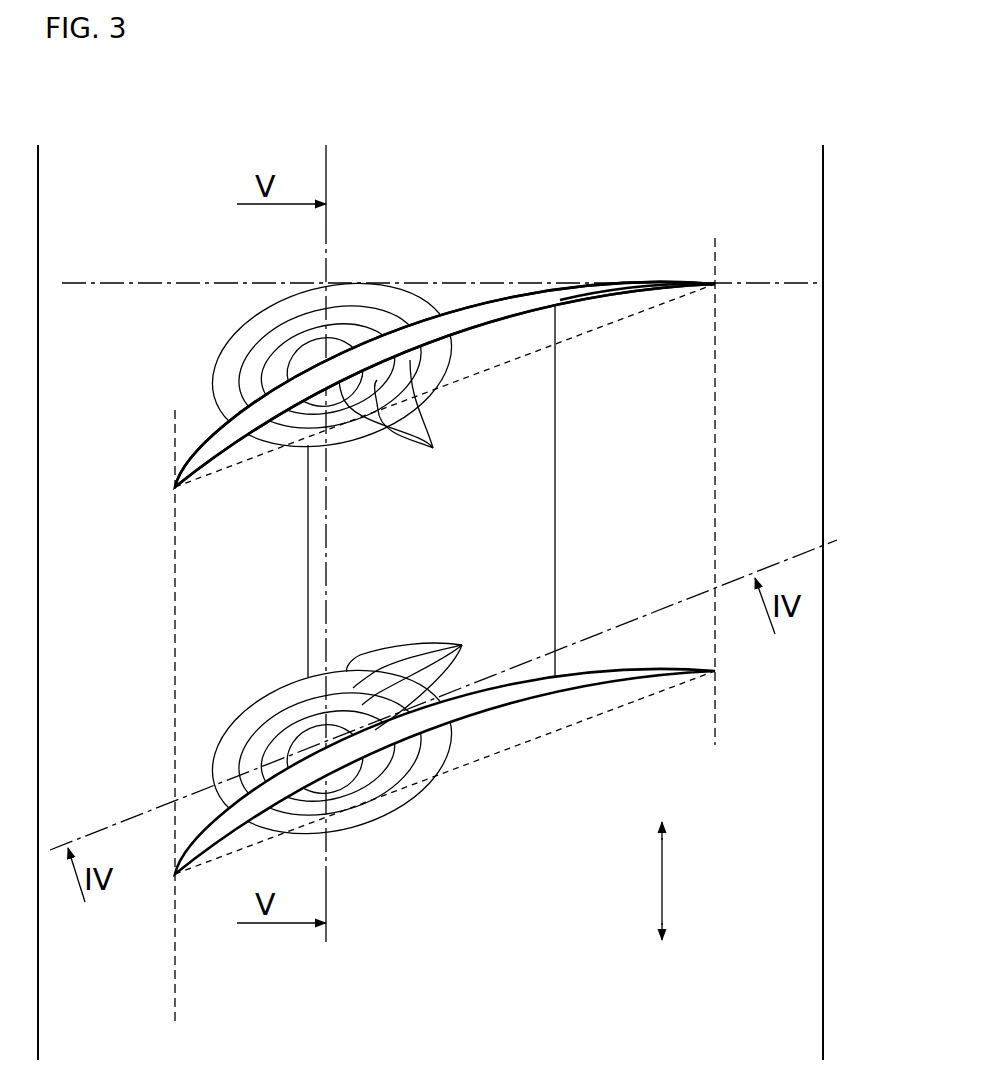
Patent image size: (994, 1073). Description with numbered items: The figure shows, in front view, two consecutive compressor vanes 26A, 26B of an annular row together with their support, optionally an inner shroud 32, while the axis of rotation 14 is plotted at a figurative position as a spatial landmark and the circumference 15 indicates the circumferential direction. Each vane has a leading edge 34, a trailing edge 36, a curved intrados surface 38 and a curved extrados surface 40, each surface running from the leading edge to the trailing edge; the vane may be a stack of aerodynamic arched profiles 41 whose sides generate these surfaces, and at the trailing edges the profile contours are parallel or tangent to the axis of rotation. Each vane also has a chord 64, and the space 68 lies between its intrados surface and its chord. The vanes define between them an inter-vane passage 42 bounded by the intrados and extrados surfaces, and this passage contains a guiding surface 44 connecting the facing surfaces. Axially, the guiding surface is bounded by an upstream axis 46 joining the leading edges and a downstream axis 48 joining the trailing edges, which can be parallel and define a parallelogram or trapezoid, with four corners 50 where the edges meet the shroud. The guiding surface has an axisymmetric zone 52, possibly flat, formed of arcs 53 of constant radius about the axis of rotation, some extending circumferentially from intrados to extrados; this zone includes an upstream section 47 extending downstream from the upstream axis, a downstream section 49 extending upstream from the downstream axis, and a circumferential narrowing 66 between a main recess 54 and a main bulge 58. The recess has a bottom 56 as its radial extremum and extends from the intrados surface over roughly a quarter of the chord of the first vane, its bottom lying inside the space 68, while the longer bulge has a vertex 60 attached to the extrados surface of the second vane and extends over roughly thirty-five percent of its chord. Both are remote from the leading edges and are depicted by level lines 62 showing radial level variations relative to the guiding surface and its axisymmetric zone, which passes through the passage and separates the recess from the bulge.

The axis of rotation 14 is at (131, 282).
The circumference 15 is at (663, 878).
The first vane 26A is at (424, 212).
The second vane 26B is at (458, 873).
The inner shroud 32 is at (94, 416).
The leading edge 34 is at (173, 489).
The trailing edge 36 is at (720, 282).
The intrados surface 38 is at (575, 302).
The extrados surface 40 is at (497, 290).
The aerodynamic arched profiles 41 is at (573, 291).
The inter-vane passage 42 is at (200, 653).
The guiding surface 44 is at (483, 534).
The upstream axis 46 is at (175, 578).
The upstream section 47 is at (216, 608).
The downstream axis 48 is at (714, 433).
The downstream section 49 is at (633, 480).
The corners 50 is at (713, 292).
The axisymmetric zone 52 is at (428, 545).
The arcs 53 is at (556, 540).
The main recess 54 is at (290, 458).
The bottom 56 is at (332, 386).
The main bulge 58 is at (278, 675).
The vertex 60 is at (308, 732).
The level lines 62 is at (409, 545).
The chord 64 is at (645, 312).
The circumferential narrowing 66 is at (374, 527).
The space 68 is at (490, 540).